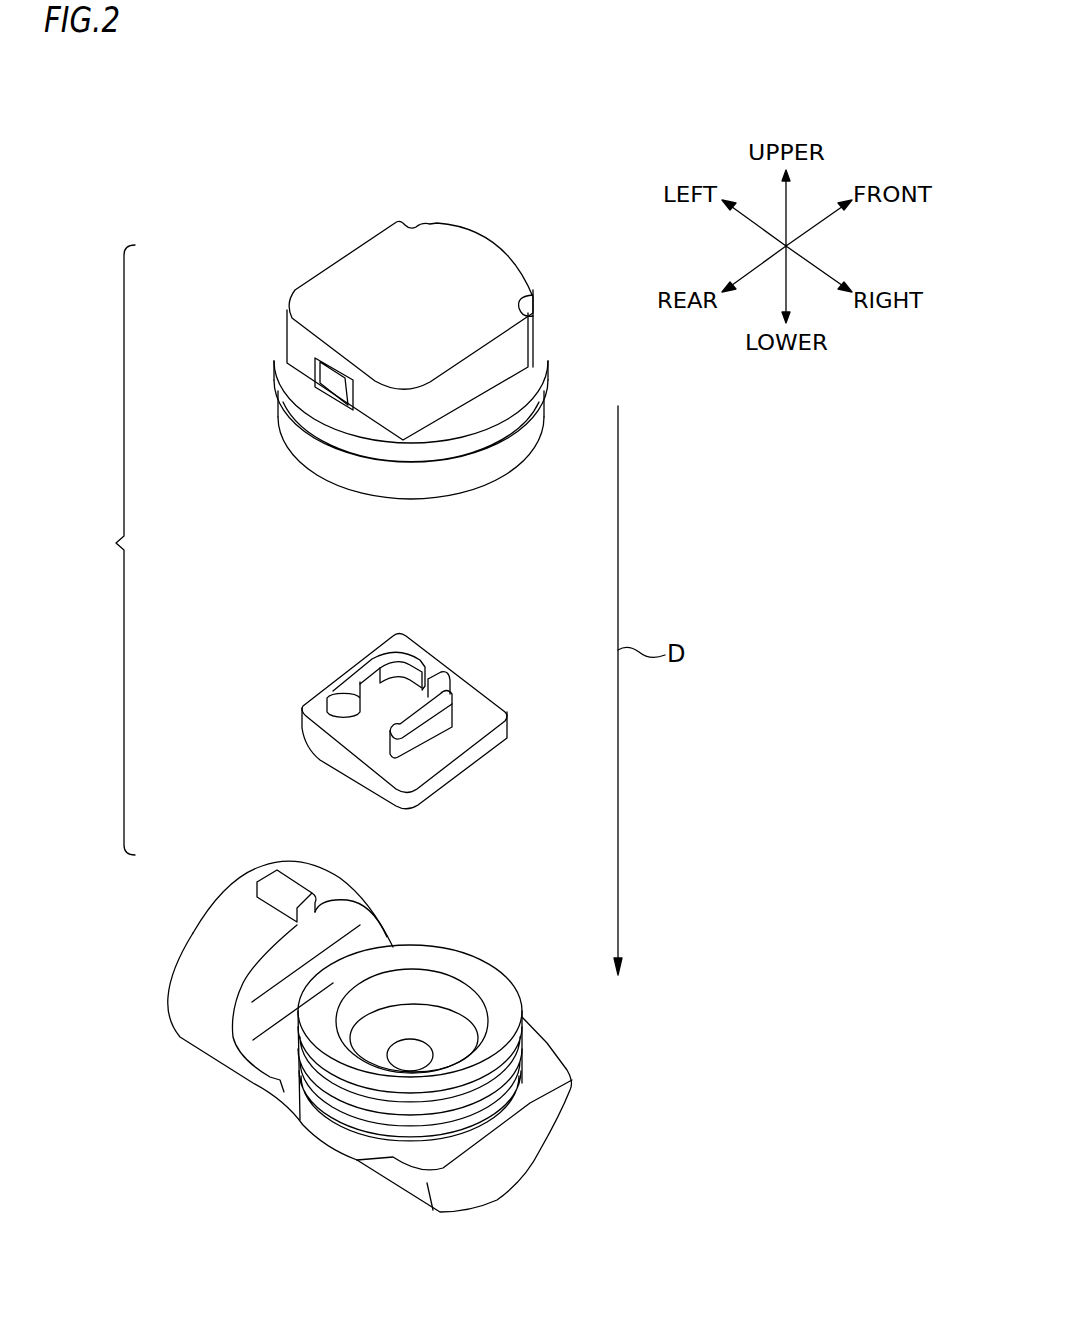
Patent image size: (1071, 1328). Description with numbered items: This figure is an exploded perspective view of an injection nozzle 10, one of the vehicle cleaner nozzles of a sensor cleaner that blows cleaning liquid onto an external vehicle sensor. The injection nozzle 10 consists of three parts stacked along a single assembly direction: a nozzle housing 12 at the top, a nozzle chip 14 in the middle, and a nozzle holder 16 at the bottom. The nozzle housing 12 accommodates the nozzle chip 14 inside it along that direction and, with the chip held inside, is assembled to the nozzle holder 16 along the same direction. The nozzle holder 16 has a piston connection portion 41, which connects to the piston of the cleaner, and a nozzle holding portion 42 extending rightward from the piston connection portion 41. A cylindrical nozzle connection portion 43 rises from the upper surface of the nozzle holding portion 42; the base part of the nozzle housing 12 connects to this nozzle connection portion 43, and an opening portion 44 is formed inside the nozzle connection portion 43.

The injection nozzle 10 is at (112, 550).
The nozzle housing 12 is at (264, 308).
The nozzle chip 14 is at (279, 669).
The nozzle holder 16 is at (334, 1039).
The piston connection portion 41 is at (213, 937).
The nozzle holding portion 42 is at (485, 1183).
The nozzle connection portion 43 is at (428, 982).
The opening portion 44 is at (365, 1048).